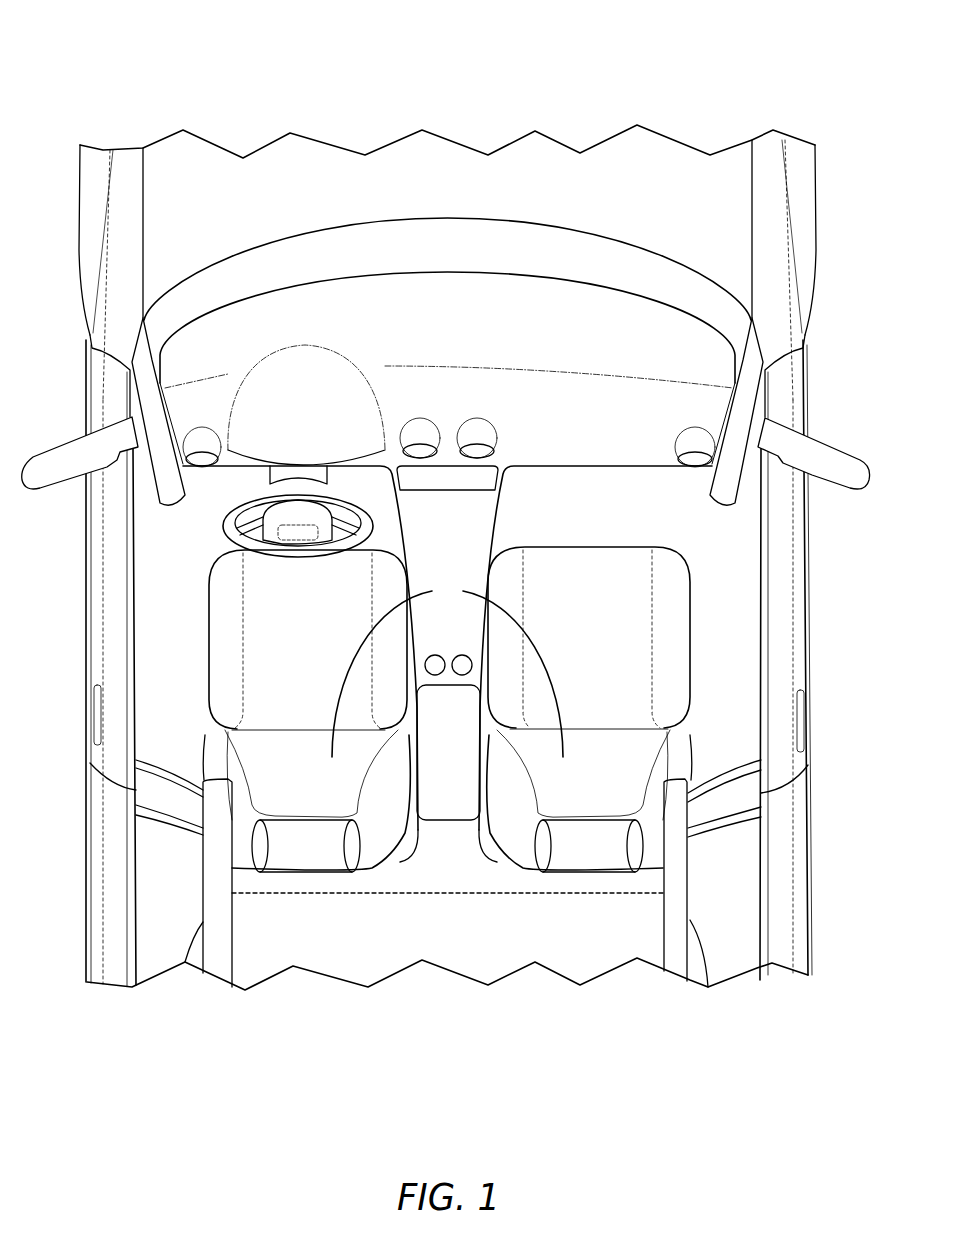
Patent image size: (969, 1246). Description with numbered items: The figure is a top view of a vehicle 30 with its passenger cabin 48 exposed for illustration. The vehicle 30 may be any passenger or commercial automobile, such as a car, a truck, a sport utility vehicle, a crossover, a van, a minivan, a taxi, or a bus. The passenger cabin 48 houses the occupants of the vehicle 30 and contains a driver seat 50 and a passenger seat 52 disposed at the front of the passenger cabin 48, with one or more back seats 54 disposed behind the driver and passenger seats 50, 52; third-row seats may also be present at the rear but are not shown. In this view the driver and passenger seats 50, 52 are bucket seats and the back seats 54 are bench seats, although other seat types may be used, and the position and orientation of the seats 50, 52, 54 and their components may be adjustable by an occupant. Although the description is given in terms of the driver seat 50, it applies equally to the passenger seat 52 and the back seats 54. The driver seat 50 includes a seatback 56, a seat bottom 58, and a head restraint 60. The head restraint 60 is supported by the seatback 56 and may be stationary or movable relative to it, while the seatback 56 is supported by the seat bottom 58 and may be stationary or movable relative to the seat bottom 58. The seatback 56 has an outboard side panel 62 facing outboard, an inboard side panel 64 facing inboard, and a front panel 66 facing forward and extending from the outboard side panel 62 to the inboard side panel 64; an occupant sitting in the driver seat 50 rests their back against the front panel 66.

The vehicle 30 is at (168, 64).
The passenger cabin 48 is at (716, 540).
The driver seat 50 is at (210, 622).
The passenger seat 52 is at (689, 623).
The back seats 54 is at (706, 939).
The seatback 56 is at (490, 870).
The seat bottom 58 is at (388, 570).
The head restraint 60 is at (305, 873).
The outboard side panel 62 is at (205, 763).
The inboard side panel 64 is at (490, 792).
The front panel 66 is at (447, 667).